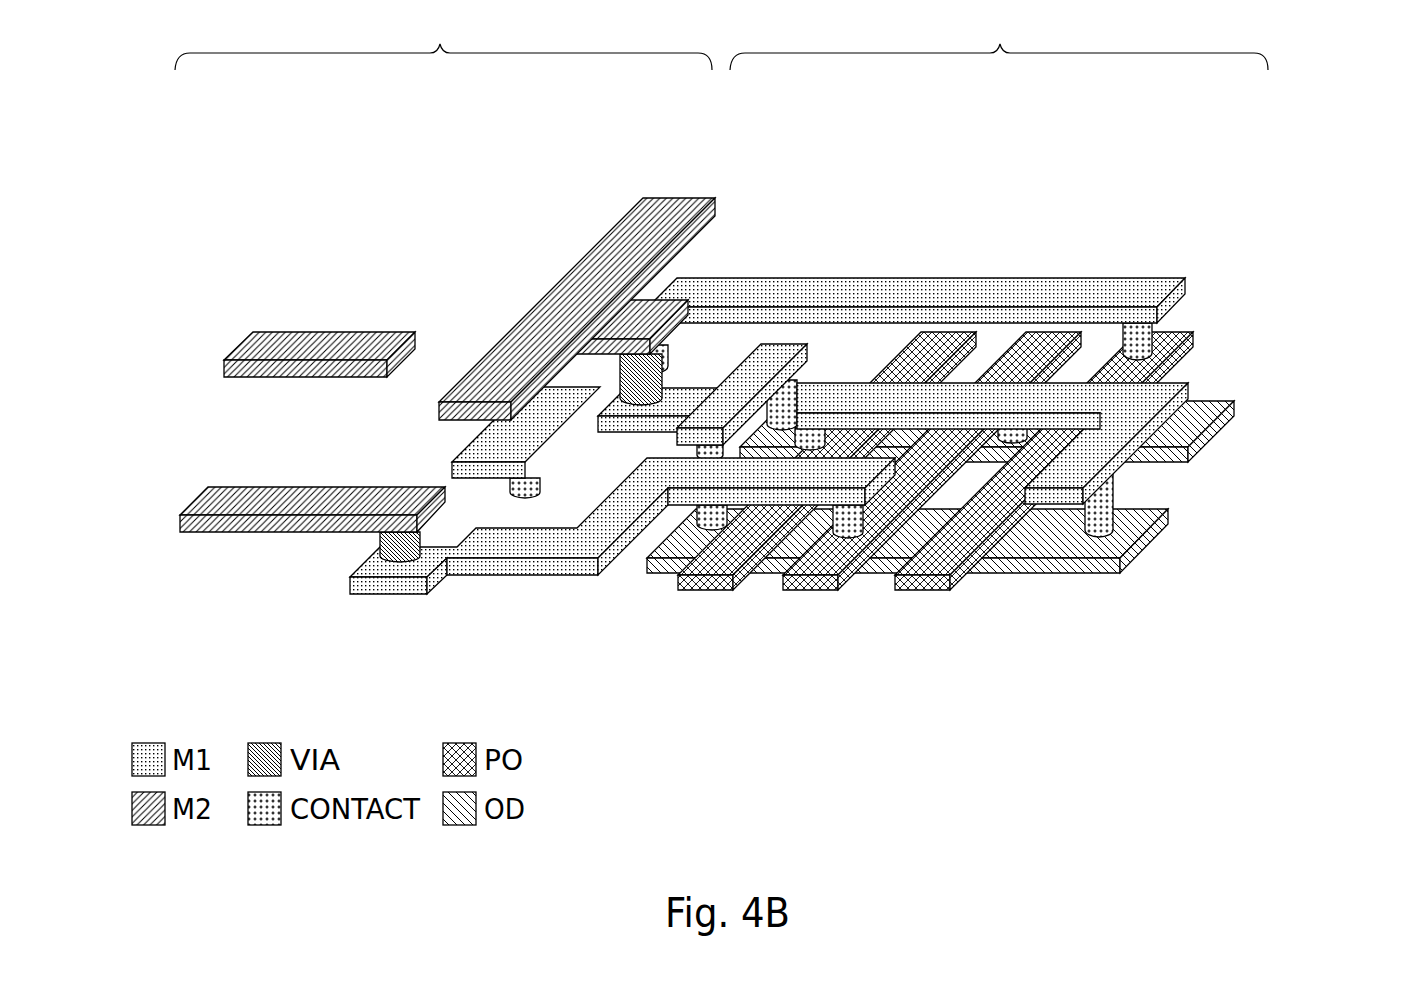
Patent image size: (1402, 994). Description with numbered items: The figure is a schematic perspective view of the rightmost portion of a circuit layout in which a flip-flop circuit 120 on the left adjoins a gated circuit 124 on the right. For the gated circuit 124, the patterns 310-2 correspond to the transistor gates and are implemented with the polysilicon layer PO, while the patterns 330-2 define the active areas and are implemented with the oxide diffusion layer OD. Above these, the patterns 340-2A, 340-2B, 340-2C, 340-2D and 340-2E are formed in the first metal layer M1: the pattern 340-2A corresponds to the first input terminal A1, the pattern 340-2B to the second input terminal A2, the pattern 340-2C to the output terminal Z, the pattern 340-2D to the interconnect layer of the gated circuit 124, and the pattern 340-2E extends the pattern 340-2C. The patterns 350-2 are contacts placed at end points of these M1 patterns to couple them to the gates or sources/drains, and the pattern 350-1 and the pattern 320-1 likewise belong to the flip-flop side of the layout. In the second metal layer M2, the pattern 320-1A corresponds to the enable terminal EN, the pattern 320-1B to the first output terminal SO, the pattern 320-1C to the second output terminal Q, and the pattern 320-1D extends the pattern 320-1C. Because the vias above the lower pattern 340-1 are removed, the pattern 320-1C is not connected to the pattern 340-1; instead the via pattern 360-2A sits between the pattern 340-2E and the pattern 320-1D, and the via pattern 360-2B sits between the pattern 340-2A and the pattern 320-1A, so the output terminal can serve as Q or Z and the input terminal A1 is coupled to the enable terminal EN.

The flip-flop circuit 120 is at (443, 41).
The gated circuit 124 is at (999, 41).
The patterns 310-2 is at (708, 592).
The contact of first cell 320-1 is at (541, 488).
The pattern 320-1A is at (186, 534).
The pattern 320-1B is at (305, 378).
The pattern 320-1C is at (592, 252).
The pattern 320-1D is at (630, 320).
The patterns 330-2 is at (1205, 464).
The pattern 340-1 is at (478, 456).
The pattern 340-2A is at (492, 596).
The pattern 340-2B is at (1032, 278).
The pattern 340-2C is at (802, 356).
The pattern 340-2D is at (1190, 398).
The pattern 340-2E is at (606, 425).
The patterns 350-1 is at (668, 350).
The patterns 350-2 is at (785, 384).
The pattern 360-2A is at (668, 372).
The pattern 360-2B is at (380, 540).